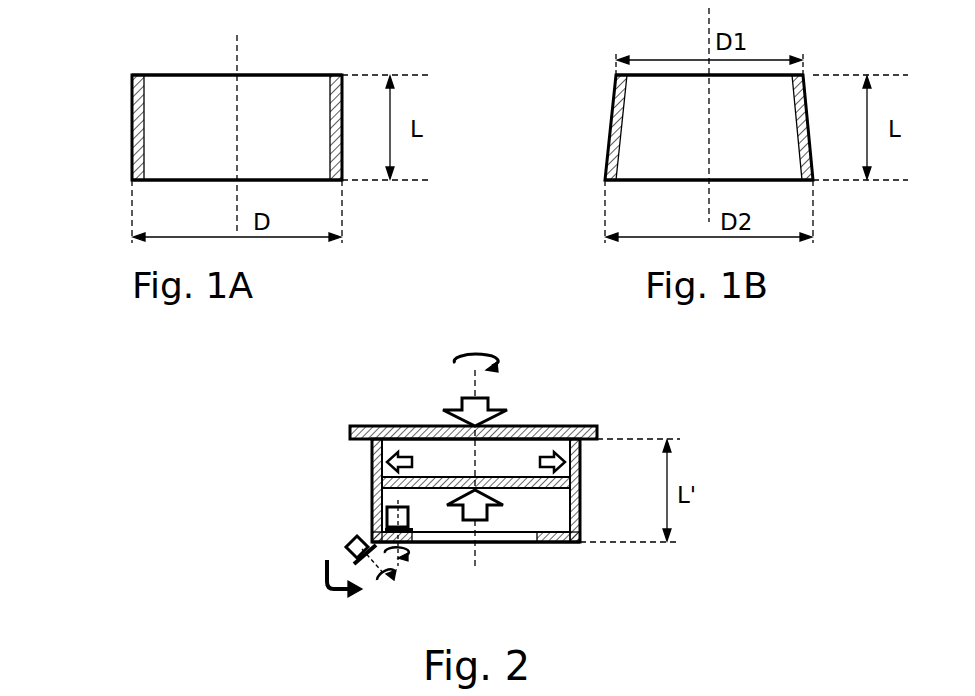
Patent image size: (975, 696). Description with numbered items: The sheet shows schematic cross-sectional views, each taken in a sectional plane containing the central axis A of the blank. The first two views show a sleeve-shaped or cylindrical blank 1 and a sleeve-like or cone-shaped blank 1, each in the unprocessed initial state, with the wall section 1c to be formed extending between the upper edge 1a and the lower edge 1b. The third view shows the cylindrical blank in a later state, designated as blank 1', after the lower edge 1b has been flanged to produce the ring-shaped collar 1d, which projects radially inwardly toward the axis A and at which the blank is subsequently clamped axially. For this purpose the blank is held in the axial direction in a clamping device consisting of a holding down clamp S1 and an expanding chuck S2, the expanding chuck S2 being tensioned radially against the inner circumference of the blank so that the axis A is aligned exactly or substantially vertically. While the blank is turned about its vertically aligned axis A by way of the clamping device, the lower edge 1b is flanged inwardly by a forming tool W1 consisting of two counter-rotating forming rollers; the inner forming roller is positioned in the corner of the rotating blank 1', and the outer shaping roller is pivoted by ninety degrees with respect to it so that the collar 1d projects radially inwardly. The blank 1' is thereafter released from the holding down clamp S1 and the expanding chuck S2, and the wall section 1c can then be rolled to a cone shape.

In FIG. 1A, the blank 1 is at (181, 127).
In FIG. 1B, the blank 1 is at (653, 127).
In FIG. 1A, the first end face of workpiece 1a is at (237, 75).
In FIG. 1B, the first end face of workpiece 1a is at (709, 75).
In FIG. 1A, the lower edge 1b is at (237, 180).
In FIG. 1B, the lower edge 1b is at (709, 180).
In FIG. 2, the lower edge 1b is at (475, 548).
In FIG. 1A, the wall section 1c is at (340, 127).
In FIG. 1B, the wall section 1c is at (813, 127).
In FIG. 2, the wall section 1c is at (582, 490).
In FIG. 2, the collar 1d is at (545, 543).
In FIG. 2, the blank 1' is at (314, 490).
In FIG. 1A, the axis A is at (240, 40).
In FIG. 1B, the axis A is at (709, 25).
In FIG. 2, the axis A is at (478, 383).
In FIG. 2, the holding down clamp S1 is at (597, 431).
In FIG. 2, the expanding chuck S2 is at (533, 490).
In FIG. 2, the forming tool W1 is at (370, 513).